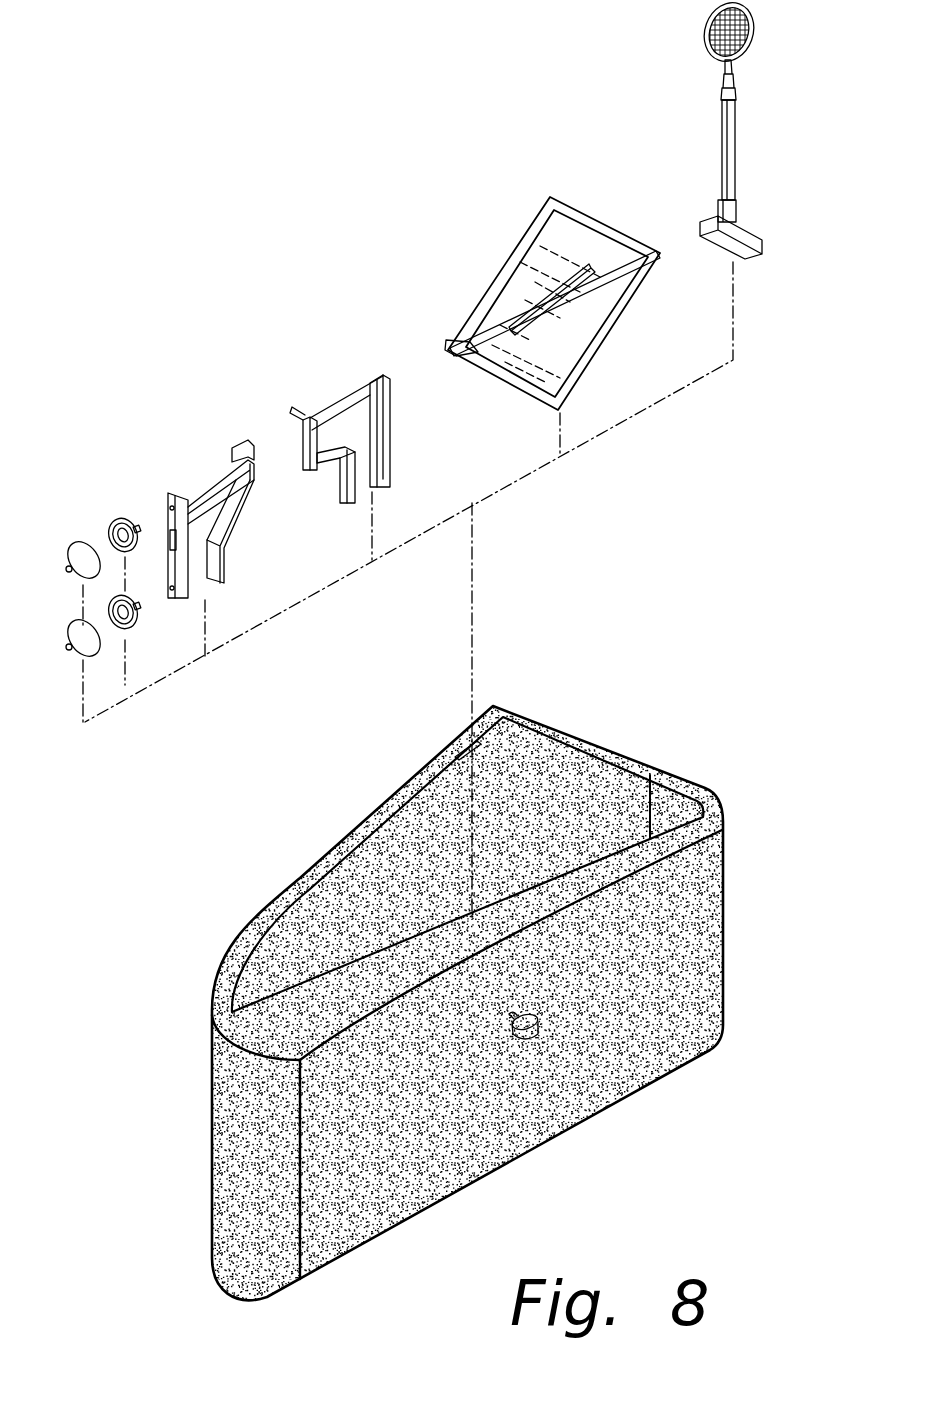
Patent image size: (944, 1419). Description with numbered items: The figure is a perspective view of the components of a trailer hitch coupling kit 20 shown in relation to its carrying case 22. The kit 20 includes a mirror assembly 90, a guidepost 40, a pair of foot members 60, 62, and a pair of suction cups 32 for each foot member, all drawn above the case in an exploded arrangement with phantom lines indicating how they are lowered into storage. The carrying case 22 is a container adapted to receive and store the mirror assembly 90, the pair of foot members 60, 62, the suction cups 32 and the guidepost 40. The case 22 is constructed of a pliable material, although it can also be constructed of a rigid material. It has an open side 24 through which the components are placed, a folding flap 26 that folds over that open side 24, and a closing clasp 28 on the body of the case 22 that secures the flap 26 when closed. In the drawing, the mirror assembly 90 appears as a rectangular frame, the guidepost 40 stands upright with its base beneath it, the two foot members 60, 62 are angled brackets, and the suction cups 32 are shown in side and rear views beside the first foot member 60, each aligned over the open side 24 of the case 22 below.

The trailer hitch coupling kit 20 is at (294, 231).
The carrying case 22 is at (707, 937).
The open side 24 is at (637, 813).
The folding flap 26 is at (347, 860).
The closing clasp 28 is at (538, 1030).
The suction cups 32 is at (112, 522).
The guidepost 40 is at (737, 126).
The foot member 60 is at (205, 490).
The foot member 62 is at (338, 405).
The mirror assembly 90 is at (520, 240).